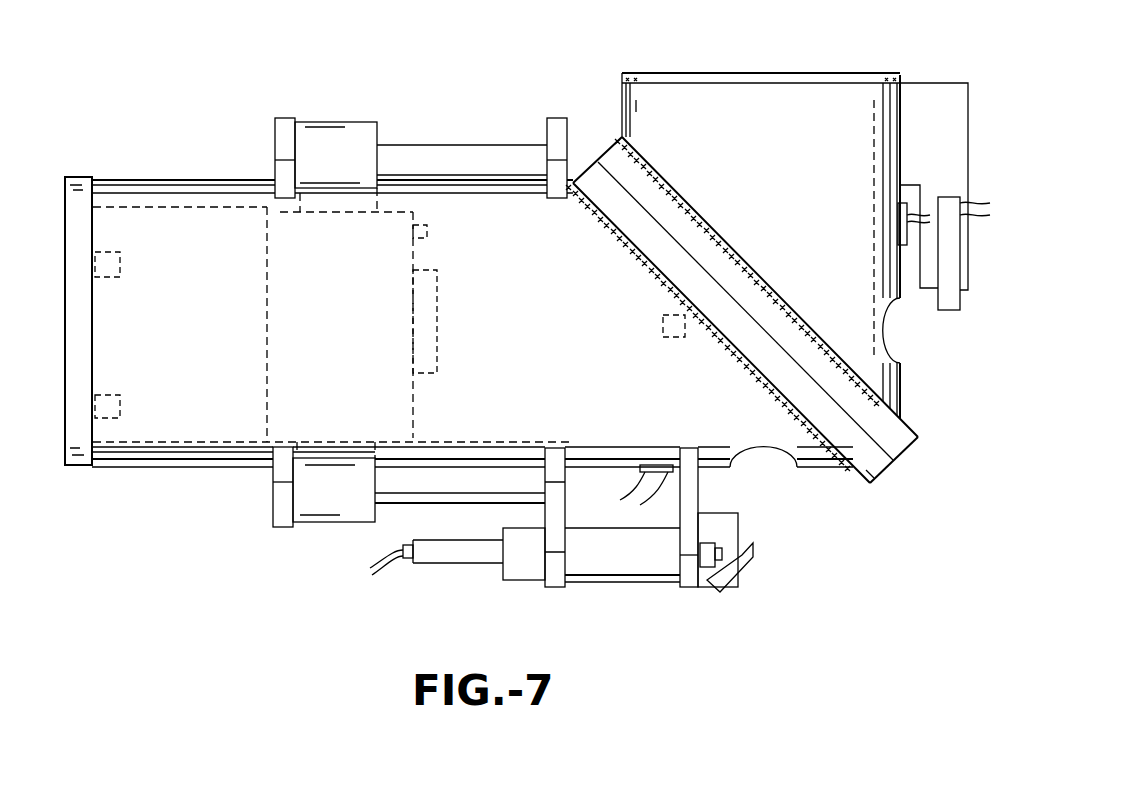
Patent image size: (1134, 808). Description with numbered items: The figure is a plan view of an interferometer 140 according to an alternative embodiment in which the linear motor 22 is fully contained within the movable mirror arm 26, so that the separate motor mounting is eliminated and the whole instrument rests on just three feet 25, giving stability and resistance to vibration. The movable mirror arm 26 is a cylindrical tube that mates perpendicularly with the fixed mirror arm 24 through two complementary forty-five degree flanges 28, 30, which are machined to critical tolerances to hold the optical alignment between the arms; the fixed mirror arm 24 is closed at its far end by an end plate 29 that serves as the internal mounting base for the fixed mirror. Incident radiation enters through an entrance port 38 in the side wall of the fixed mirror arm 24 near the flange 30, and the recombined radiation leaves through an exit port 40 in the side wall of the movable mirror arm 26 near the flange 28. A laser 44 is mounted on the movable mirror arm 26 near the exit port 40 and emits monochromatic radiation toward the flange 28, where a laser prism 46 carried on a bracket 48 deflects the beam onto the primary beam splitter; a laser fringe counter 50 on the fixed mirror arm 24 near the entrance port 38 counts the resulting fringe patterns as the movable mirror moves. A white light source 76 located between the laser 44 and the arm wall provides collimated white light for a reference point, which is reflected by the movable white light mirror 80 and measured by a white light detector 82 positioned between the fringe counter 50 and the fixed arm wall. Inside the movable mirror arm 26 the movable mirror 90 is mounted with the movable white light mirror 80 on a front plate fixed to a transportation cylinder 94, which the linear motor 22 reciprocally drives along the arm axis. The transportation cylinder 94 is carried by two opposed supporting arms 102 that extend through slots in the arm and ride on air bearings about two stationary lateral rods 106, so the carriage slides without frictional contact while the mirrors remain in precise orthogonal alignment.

The linear motor 22 is at (230, 427).
The fixed mirror arm 24 is at (791, 225).
The feet 25 is at (121, 265).
The movable mirror arm 26 is at (554, 342).
The 45° flange 28 is at (870, 484).
The end plate 29 is at (780, 80).
The 45° flange 30 is at (765, 326).
The entrance port 38 is at (891, 347).
The exit port 40 is at (782, 458).
The laser 44 is at (645, 577).
The laser prism 46 is at (753, 557).
The bracket 48 is at (944, 194).
The laser fringe counter 50 is at (953, 310).
The white light source 76 is at (640, 468).
The movable white light mirror 80 is at (427, 232).
The white light detector 82 is at (847, 239).
The movable mirror 90 is at (437, 355).
The transportation cylinder 94 is at (298, 245).
The supporting arms 102 is at (340, 135).
The lateral rods 106 is at (430, 527).
The interferometer 140 is at (421, 319).